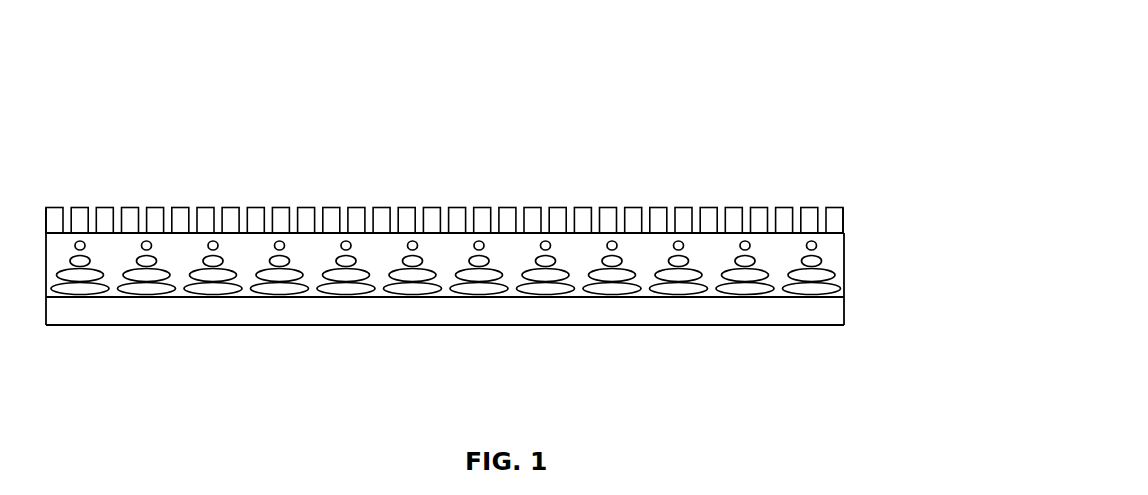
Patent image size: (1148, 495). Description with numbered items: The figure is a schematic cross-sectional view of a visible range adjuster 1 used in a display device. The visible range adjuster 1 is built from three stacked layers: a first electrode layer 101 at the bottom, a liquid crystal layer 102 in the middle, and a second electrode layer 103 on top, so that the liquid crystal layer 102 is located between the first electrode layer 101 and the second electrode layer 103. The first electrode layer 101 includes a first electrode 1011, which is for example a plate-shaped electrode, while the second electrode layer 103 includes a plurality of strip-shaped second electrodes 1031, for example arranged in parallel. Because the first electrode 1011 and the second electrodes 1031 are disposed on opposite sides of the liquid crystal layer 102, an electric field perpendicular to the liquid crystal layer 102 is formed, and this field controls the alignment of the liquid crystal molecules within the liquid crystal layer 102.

The visible range adjuster 1 is at (650, 66).
The first electrode layer 101 is at (500, 346).
The first electrode 1011 is at (447, 310).
The liquid crystal layer 102 is at (851, 265).
The second electrode layer 103 is at (500, 190).
The second electrodes 1031 is at (432, 208).